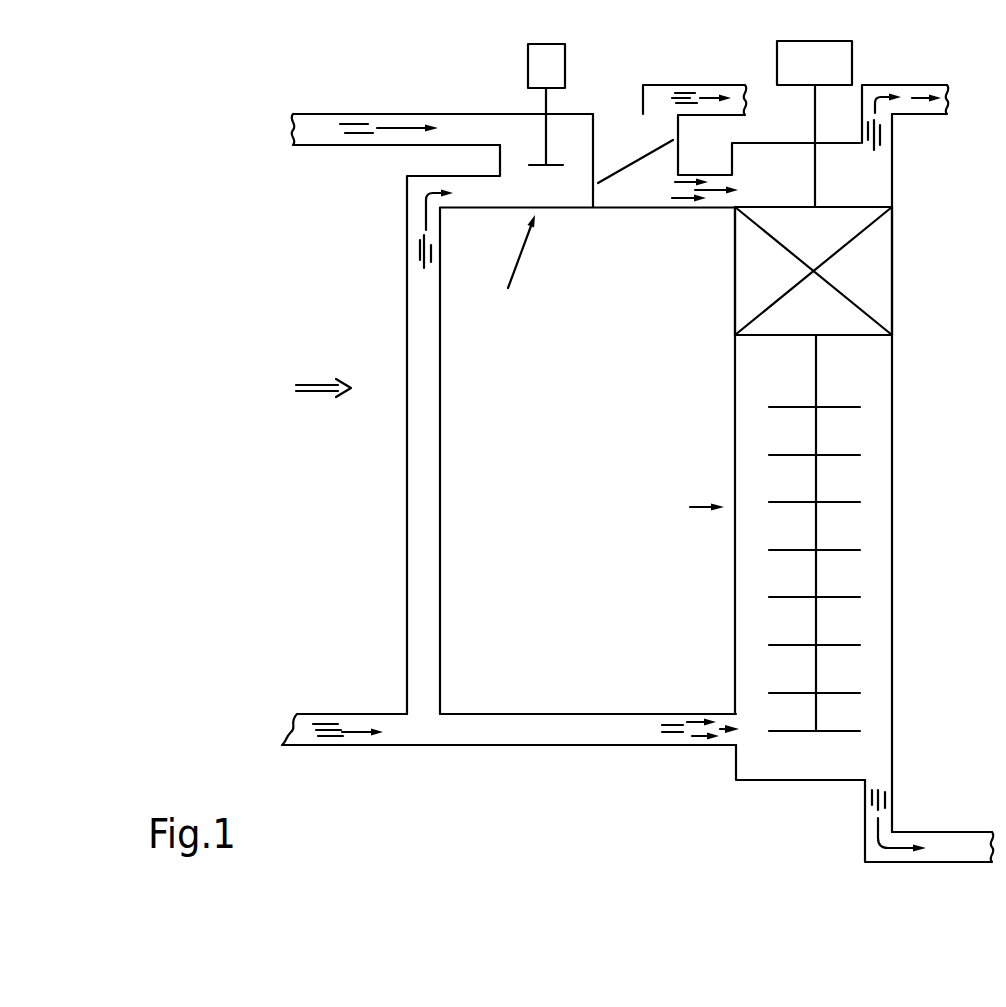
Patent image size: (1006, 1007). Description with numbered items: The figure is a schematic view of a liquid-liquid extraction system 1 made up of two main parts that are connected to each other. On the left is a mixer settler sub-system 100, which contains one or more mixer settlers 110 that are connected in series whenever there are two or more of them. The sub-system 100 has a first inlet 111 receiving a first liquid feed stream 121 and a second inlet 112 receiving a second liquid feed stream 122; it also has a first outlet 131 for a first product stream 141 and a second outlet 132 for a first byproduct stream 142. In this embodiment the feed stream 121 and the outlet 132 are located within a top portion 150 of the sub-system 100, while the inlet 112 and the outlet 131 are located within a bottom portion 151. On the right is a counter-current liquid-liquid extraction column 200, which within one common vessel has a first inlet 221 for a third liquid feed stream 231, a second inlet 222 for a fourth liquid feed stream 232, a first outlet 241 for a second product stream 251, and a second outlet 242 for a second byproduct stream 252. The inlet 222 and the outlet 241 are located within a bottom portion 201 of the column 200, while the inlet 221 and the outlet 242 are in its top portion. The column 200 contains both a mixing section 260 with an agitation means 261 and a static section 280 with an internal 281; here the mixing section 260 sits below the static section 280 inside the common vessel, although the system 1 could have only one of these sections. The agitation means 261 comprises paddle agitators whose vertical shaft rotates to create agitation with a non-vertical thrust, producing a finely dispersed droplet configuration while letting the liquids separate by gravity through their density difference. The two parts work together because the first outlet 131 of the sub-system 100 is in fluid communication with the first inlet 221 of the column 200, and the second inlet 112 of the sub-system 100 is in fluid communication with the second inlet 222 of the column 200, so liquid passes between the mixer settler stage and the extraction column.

The liquid-liquid extraction system 1 is at (314, 391).
The mixer settler sub-system 100 is at (497, 272).
The mixer settler 110 is at (572, 193).
The first inlet 111 is at (507, 122).
The second inlet 112 is at (495, 190).
The first liquid feed stream 121 is at (366, 125).
The second liquid feed stream 122 is at (420, 268).
The first outlet 131 is at (672, 195).
The second outlet 132 is at (661, 100).
The first product stream 141 is at (687, 178).
The first byproduct stream 142 is at (688, 95).
The top portion 150 is at (622, 135).
The bottom portion 151 is at (623, 190).
The counter-current liquid-liquid extraction column 200 is at (682, 506).
The bottom portion 201 is at (868, 185).
The first inlet 221 is at (732, 185).
The second inlet 222 is at (736, 722).
The third liquid feed stream 231 is at (717, 192).
The fourth liquid feed stream 232 is at (682, 738).
The first outlet 241 is at (877, 782).
The second outlet 242 is at (868, 105).
The second product stream 251 is at (878, 808).
The second byproduct stream 252 is at (878, 130).
The mixing section 260 is at (876, 480).
The agitation means 261 is at (840, 452).
The static section 280 is at (875, 278).
The internal 281 is at (863, 233).